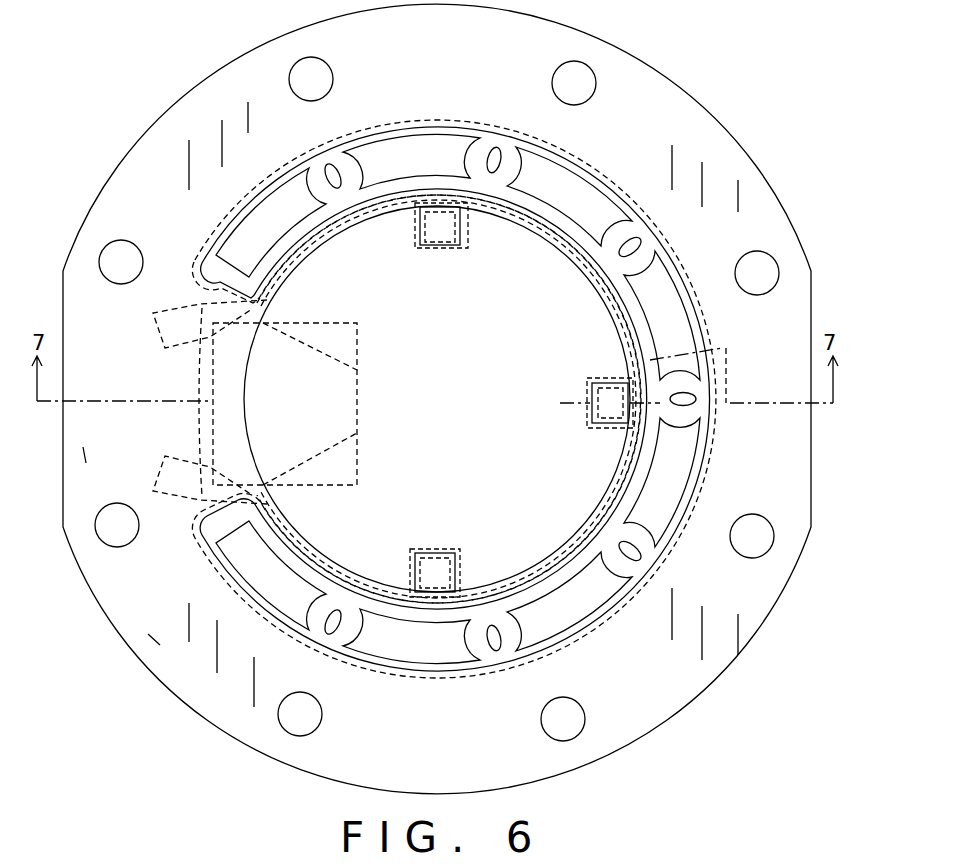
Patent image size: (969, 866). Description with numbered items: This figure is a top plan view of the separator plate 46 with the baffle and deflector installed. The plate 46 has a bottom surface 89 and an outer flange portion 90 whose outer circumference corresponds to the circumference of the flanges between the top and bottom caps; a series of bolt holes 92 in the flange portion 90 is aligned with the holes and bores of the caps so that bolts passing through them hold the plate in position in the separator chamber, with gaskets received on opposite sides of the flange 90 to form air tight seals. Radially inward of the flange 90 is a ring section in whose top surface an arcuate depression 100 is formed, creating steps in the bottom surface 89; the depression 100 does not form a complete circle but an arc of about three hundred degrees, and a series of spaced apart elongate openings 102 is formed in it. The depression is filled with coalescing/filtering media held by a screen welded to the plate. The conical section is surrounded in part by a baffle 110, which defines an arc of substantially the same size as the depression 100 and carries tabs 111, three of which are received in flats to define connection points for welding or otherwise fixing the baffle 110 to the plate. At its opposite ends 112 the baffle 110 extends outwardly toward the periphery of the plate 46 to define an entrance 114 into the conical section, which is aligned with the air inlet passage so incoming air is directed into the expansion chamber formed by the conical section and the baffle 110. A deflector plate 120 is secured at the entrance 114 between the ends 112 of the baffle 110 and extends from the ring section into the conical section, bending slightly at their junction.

The separator plate 46 is at (703, 62).
The bottom surface 89 is at (83, 455).
The outer flange portion 90 is at (155, 638).
The bolt holes 92 is at (110, 530).
The arcuate depression 100 is at (391, 128).
The elongate openings 102 is at (290, 207).
The baffle 110 is at (270, 310).
The tabs 111 is at (443, 228).
The baffle ends 112 is at (156, 312).
The entrance 114 is at (212, 426).
The deflector plate 120 is at (285, 404).